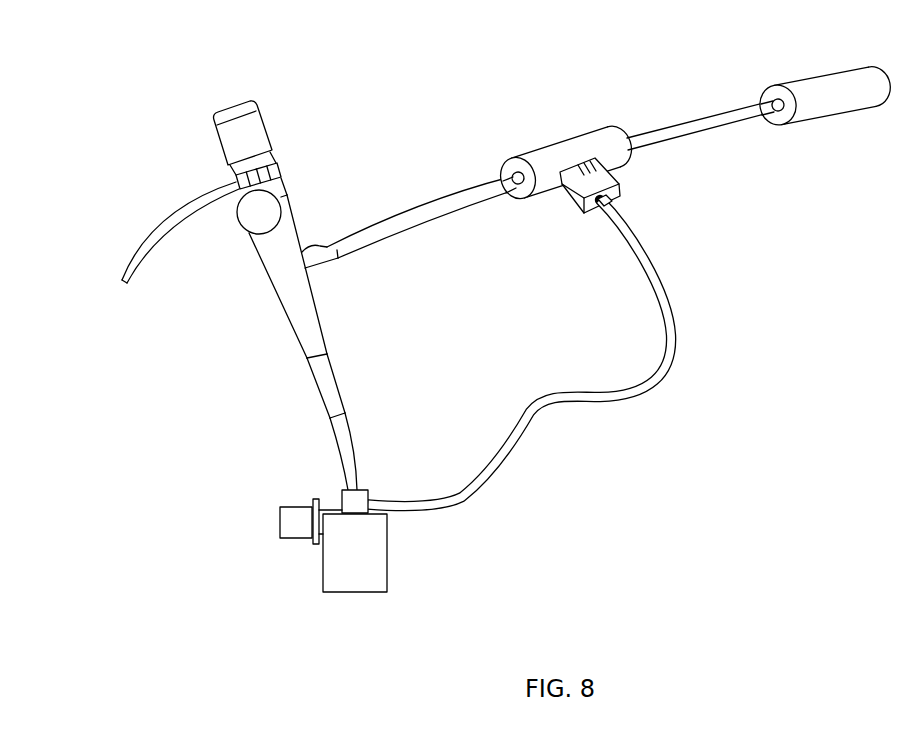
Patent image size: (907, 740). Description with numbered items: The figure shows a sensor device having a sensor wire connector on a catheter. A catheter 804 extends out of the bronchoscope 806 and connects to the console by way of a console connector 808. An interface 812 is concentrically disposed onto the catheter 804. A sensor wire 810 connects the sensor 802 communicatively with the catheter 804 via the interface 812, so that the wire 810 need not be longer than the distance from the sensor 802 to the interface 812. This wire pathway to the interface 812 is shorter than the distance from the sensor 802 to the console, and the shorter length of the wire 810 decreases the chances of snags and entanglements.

The sensor 802 is at (342, 500).
The catheter 804 is at (672, 128).
The bronchoscope 806 is at (218, 141).
The console connector 808 is at (822, 73).
The sensor wire 810 is at (642, 393).
The interface 812 is at (528, 150).